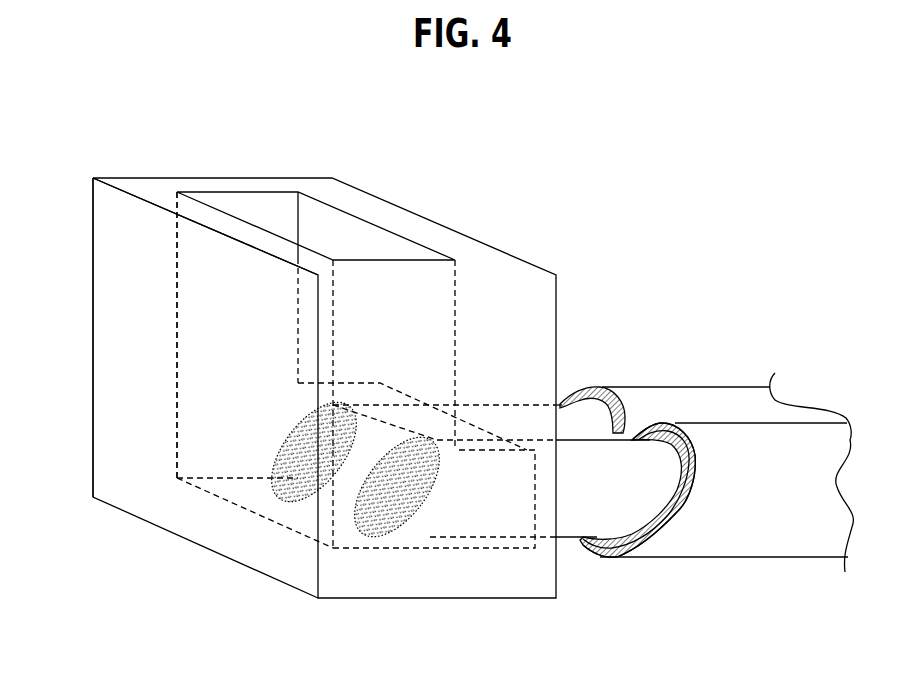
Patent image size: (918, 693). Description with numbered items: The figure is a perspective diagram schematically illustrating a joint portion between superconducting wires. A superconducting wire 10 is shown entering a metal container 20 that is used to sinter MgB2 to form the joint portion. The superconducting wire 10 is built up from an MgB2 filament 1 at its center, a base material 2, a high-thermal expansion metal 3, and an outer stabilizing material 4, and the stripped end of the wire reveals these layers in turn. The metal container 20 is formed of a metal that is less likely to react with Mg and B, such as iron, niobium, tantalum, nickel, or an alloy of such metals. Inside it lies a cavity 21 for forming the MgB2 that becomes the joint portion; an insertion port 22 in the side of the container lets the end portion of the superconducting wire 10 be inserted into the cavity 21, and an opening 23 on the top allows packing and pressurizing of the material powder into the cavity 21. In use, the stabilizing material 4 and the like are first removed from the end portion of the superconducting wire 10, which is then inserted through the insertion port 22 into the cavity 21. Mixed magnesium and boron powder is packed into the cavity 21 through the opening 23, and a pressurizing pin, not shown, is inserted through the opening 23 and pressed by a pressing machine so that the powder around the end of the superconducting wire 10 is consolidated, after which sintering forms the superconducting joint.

The MgB2 filament 1 is at (338, 500).
The base material 2 is at (610, 502).
The high-thermal expansion metal 3 is at (663, 426).
The stabilizing material 4 is at (680, 424).
The superconducting wire 10 is at (740, 382).
The metal container 20 is at (217, 177).
The cavity 21 is at (178, 371).
The insertion port 22 is at (535, 512).
The opening 23 is at (372, 225).